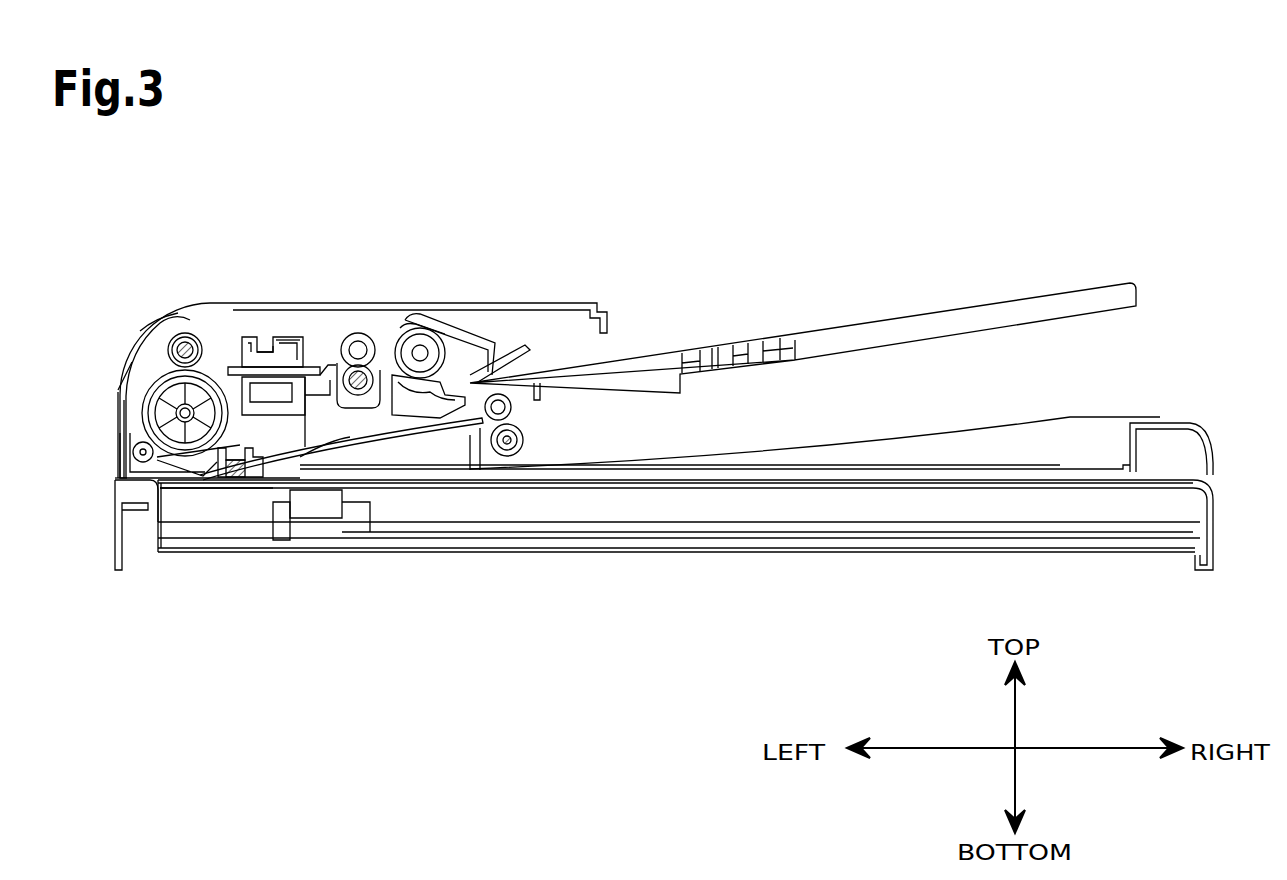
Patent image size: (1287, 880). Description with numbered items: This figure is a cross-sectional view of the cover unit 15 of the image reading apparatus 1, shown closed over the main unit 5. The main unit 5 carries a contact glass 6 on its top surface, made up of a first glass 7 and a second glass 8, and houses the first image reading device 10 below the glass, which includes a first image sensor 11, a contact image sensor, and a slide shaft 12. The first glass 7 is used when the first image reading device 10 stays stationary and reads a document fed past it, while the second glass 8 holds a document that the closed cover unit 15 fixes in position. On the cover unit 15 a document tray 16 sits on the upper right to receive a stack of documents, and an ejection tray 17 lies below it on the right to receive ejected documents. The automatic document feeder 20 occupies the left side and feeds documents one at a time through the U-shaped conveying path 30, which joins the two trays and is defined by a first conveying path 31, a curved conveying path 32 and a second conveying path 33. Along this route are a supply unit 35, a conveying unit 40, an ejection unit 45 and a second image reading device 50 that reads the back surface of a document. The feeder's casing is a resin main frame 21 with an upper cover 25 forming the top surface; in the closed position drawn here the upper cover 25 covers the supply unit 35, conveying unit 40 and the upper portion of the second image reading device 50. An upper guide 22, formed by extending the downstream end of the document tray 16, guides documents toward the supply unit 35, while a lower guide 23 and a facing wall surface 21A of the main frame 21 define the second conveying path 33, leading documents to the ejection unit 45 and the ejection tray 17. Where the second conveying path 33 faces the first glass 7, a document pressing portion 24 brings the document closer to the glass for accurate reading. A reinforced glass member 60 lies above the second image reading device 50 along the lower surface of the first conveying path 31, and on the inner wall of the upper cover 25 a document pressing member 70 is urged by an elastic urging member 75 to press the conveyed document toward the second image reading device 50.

The image reading apparatus 1 is at (168, 182).
The main unit 5 is at (1215, 540).
The contact glass 6 is at (1045, 495).
The first glass 7 is at (210, 497).
The second glass 8 is at (705, 490).
The first image reading device 10 is at (415, 596).
The first image sensor 11 is at (315, 505).
The slide shaft 12 is at (385, 532).
The cover unit 15 is at (1203, 422).
The document tray 16 is at (1000, 291).
The ejection tray 17 is at (980, 412).
The automatic document feeder 20 is at (562, 292).
The main frame 21 is at (118, 440).
The wall surface 21A is at (410, 480).
The upper guide 22 is at (662, 345).
The lower guide 23 is at (462, 480).
The document pressing portion 24 is at (235, 480).
The upper cover 25 is at (130, 355).
The U-shaped conveying path 30 is at (478, 350).
The first conveying path 31 is at (340, 350).
The curved conveying path 32 is at (118, 398).
The second conveying path 33 is at (295, 490).
The supply unit 35 is at (450, 318).
The conveying unit 40 is at (178, 334).
The ejection unit 45 is at (525, 413).
The second image reading device 50 is at (240, 345).
The glass member 60 is at (305, 345).
The document pressing member 70 is at (272, 340).
The urging member 75 is at (246, 340).